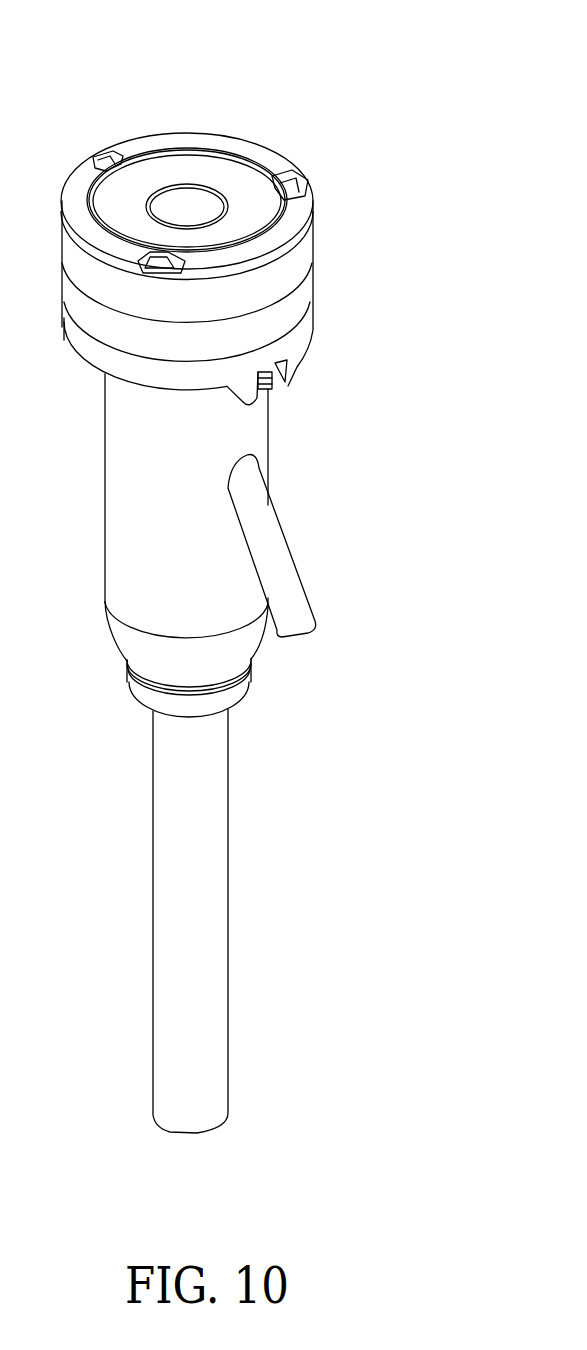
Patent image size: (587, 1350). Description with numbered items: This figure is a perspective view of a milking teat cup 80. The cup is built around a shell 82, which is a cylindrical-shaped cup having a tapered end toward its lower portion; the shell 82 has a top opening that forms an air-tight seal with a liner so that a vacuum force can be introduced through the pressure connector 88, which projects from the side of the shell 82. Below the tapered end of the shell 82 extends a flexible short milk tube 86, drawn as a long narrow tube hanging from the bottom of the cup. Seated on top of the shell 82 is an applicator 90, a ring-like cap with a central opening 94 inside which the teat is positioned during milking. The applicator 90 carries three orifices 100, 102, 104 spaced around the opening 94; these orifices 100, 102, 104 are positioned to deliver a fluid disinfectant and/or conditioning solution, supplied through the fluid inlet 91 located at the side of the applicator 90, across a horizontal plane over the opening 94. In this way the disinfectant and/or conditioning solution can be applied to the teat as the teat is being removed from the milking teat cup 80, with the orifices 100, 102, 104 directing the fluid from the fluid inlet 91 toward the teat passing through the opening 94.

The milking teat cup 80 is at (429, 73).
The shell 82 is at (272, 442).
The flexible short milk tube 86 is at (228, 822).
The pressure connector 88 is at (290, 550).
The applicator 90 is at (312, 247).
The fluid inlet 91 is at (272, 386).
The opening 94 is at (190, 200).
The orifice 100 is at (112, 155).
The orifice 102 is at (305, 182).
The orifice 104 is at (155, 273).